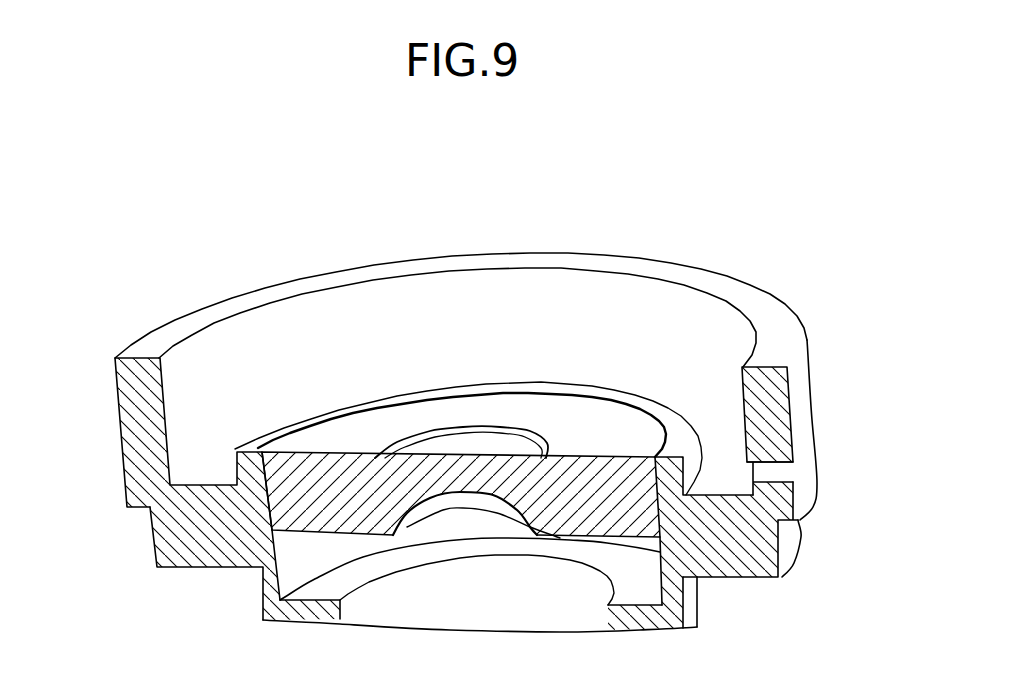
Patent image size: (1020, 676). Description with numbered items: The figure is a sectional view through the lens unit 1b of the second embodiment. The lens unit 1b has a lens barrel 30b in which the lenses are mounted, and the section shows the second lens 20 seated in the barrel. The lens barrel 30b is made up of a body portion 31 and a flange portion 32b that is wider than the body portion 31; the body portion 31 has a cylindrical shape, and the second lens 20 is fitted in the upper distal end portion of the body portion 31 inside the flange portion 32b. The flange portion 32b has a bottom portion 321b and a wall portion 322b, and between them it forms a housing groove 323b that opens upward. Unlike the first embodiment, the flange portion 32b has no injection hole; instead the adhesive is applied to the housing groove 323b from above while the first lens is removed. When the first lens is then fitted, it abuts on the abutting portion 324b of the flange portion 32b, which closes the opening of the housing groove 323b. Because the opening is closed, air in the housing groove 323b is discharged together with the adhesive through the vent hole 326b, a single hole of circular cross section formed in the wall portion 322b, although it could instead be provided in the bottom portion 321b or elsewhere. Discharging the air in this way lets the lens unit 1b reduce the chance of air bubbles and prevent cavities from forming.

The lens unit 1b is at (691, 196).
The second lens 20 is at (360, 430).
The lens barrel 30b is at (107, 336).
The body portion 31 is at (262, 607).
The flange portion 32b is at (115, 397).
The bottom portion 321b is at (170, 555).
The wall portion 322b is at (122, 431).
The housing groove 323b is at (215, 470).
The abutting portion 324b is at (680, 430).
The vent hole 326b is at (783, 473).